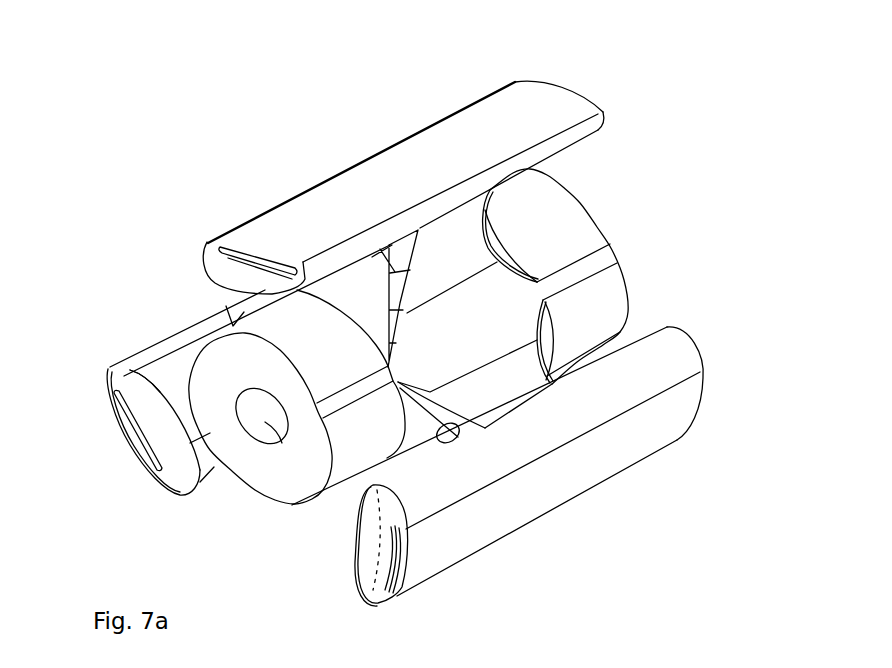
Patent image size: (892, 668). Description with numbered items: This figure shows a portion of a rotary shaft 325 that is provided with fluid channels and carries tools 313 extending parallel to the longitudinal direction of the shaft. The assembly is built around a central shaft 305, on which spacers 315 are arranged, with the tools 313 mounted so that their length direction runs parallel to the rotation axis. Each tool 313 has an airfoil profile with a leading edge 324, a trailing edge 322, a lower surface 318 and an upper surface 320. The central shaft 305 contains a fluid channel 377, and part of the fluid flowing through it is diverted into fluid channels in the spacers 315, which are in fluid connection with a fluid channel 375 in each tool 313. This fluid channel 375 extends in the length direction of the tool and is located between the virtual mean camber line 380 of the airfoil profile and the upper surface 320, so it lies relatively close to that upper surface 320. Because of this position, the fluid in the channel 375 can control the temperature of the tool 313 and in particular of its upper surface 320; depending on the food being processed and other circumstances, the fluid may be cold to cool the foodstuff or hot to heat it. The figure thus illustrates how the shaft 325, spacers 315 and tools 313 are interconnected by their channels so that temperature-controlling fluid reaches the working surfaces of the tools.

The central shaft 305 is at (265, 473).
The tool 313 is at (233, 281).
The spacer 315 is at (453, 243).
The lower surface 318 is at (158, 396).
The upper surface 320 is at (318, 207).
The trailing edge 322 is at (667, 357).
The leading edge 324 is at (590, 127).
The rotary shaft 325 is at (436, 85).
The fluid channel 375 is at (238, 250).
The fluid channel 377 is at (282, 443).
The virtual mean camber line 380 is at (380, 552).